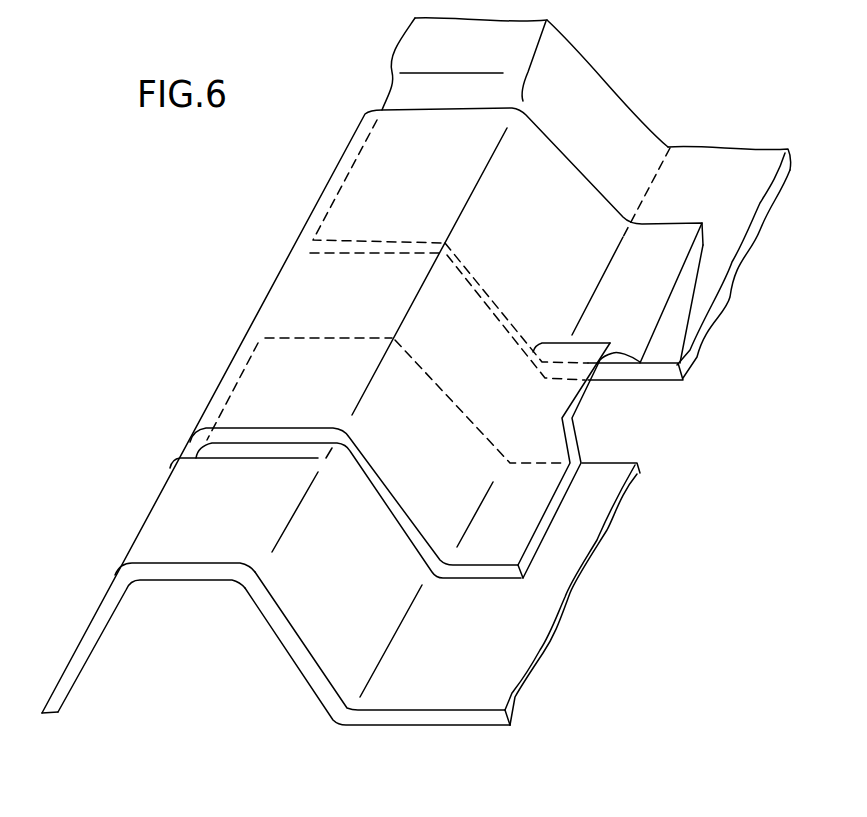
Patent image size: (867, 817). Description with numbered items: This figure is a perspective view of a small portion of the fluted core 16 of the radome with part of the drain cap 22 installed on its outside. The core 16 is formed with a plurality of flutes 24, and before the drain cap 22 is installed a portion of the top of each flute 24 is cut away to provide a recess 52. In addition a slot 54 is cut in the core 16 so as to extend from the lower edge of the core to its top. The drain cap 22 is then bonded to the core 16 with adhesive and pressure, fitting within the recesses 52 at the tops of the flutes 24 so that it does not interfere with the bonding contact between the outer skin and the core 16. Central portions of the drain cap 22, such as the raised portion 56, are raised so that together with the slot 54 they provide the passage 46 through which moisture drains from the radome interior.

The fluted core 16 is at (287, 590).
The drain cap 22 is at (403, 483).
The flute 24 is at (173, 625).
The passage 46 is at (615, 398).
The recess 52 is at (417, 87).
The slot 54 is at (597, 463).
The raised portion of drain cap 56 is at (572, 411).